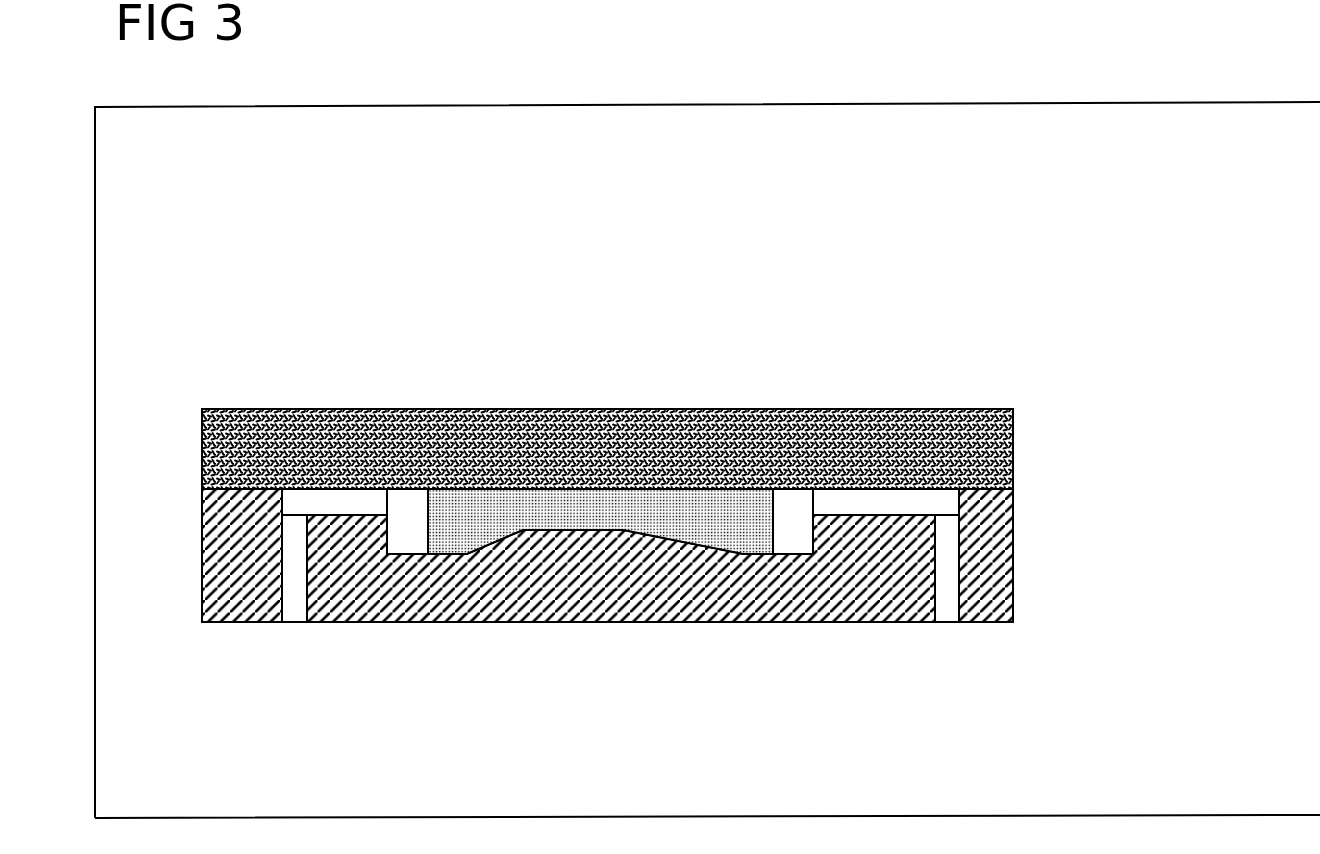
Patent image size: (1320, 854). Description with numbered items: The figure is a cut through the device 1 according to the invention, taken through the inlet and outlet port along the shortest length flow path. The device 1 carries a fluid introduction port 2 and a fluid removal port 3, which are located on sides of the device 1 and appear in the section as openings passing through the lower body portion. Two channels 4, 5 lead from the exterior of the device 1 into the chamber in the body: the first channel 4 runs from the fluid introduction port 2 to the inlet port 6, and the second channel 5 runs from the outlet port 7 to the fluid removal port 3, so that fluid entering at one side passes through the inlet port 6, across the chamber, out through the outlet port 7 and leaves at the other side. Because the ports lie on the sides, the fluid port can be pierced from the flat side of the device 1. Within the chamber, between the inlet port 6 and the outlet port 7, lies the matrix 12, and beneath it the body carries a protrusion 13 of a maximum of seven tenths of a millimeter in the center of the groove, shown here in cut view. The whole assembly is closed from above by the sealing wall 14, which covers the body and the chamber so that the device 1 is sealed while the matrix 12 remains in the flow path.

The device 1 is at (1128, 361).
The fluid introduction port 2 is at (295, 633).
The fluid removal port 3 is at (947, 633).
The channel 4 is at (318, 488).
The channel 5 is at (893, 498).
The inlet port 6 is at (410, 510).
The outlet port 7 is at (786, 513).
The matrix 12 is at (535, 515).
The protrusion 13 is at (617, 540).
The sealing wall 14 is at (958, 450).